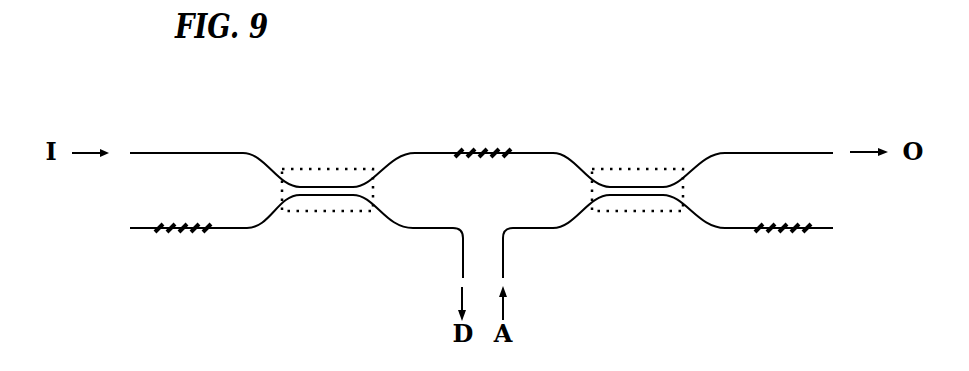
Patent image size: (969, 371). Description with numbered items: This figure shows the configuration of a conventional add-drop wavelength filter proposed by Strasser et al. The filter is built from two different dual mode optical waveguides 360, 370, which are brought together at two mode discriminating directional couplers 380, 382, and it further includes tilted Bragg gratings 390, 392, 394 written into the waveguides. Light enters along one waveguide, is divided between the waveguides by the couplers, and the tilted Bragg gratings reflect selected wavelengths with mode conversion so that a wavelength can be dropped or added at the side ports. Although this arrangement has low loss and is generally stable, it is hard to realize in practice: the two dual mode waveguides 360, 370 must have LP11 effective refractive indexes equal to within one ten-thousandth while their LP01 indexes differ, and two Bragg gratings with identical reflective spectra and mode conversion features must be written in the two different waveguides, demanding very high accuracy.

The dual mode optical waveguide 360 is at (184, 153).
The dual mode optical waveguide 370 is at (263, 223).
The mode discriminating directional coupler 380 is at (326, 170).
The mode discriminating directional coupler 382 is at (640, 169).
The tilted Bragg grating 390 is at (182, 236).
The tilted Bragg grating 392 is at (486, 150).
The tilted Bragg grating 394 is at (780, 234).